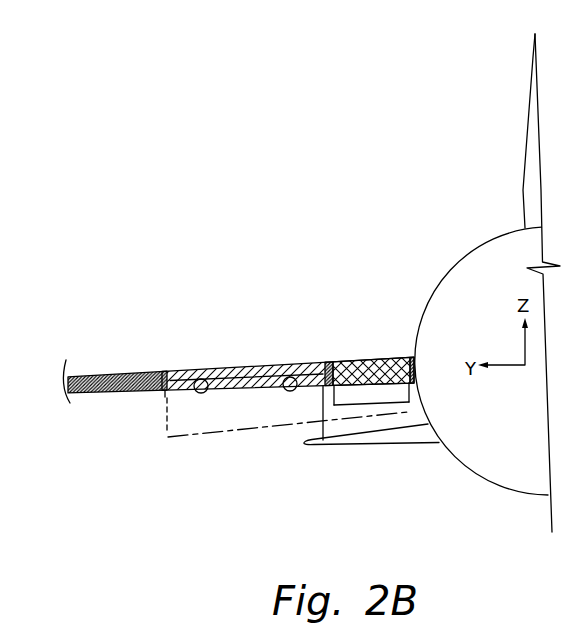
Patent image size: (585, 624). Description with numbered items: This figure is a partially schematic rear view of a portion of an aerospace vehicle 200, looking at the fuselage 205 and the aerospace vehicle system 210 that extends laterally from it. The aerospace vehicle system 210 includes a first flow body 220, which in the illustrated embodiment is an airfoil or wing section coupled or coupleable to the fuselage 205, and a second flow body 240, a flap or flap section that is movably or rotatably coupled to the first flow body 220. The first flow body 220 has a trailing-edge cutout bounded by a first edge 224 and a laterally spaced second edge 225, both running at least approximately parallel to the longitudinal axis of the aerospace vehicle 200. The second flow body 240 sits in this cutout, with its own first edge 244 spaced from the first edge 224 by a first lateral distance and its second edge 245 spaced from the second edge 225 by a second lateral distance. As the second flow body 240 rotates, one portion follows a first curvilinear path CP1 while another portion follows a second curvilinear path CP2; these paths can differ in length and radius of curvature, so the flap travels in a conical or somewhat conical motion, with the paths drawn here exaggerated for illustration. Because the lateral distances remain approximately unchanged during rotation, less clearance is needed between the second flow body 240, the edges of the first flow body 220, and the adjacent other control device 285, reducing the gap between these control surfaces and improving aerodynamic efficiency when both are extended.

The aerospace vehicle 200 is at (495, 232).
The fuselage 205 is at (458, 279).
The aerospace vehicle system 210 is at (233, 242).
The first flow body 220 is at (118, 374).
The first edge 224 is at (155, 373).
The first edge 244 is at (176, 372).
The second flow body 240 is at (267, 365).
The second edge 245 is at (307, 375).
The second edge 225 is at (347, 360).
The other control device 285 is at (373, 357).
The first curvilinear path CP1 is at (163, 403).
The second curvilinear path CP2 is at (323, 442).